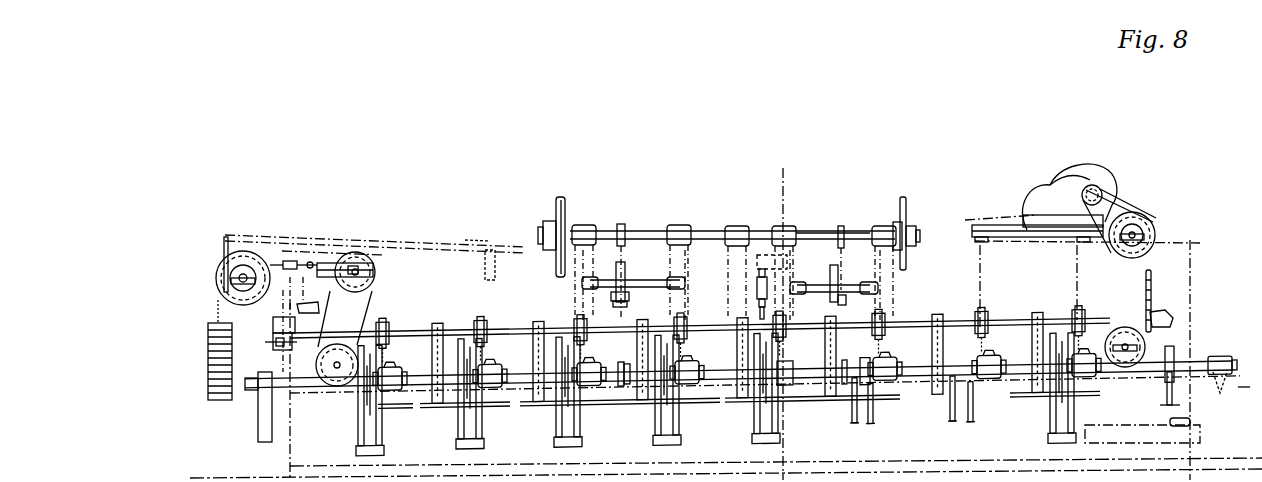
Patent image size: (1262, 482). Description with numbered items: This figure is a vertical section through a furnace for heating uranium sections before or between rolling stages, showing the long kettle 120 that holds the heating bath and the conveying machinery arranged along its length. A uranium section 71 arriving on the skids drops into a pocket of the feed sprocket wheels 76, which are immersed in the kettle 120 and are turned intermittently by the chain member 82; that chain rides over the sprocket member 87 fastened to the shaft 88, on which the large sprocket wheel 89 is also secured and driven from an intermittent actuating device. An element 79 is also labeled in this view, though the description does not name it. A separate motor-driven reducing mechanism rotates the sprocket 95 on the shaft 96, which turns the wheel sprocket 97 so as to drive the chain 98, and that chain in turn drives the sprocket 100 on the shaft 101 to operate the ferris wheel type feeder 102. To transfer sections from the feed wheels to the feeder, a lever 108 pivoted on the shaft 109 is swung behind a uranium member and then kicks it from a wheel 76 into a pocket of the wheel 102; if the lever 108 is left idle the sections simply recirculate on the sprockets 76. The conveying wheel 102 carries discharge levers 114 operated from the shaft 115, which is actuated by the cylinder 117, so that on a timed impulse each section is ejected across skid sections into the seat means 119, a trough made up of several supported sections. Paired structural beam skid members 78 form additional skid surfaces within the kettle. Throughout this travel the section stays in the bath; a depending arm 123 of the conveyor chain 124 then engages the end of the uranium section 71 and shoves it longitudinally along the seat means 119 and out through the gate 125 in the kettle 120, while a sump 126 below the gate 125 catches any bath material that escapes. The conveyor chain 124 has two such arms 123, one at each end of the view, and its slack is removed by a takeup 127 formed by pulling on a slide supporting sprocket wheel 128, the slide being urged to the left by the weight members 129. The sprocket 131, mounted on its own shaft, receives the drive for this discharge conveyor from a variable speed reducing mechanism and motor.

The uranium section 71 is at (1228, 396).
The feed sprocket wheels 76 is at (868, 370).
The structural beam skid members 78 is at (456, 437).
The shaft 79 is at (815, 372).
The chain member 82 is at (840, 305).
The sprocket member 87 is at (843, 228).
The shaft 88 is at (803, 228).
The large sprocket wheel 89 is at (905, 200).
The sprocket 95 is at (557, 208).
The shaft 96 is at (606, 225).
The wheel sprocket 97 is at (625, 224).
The chain 98 is at (625, 330).
The sprocket 100 is at (620, 396).
The shaft 101 is at (505, 370).
The ferris wheel type feeder 102 is at (460, 345).
The lever 108 is at (830, 325).
The shaft 109 is at (900, 330).
The discharge levers 114 is at (425, 322).
The shaft 115 is at (512, 312).
The cylinder 117 is at (755, 292).
The seat means 119 is at (490, 420).
The kettle 120 is at (290, 447).
The depending arm 123 is at (1172, 312).
The conveyor chain 124 is at (465, 240).
The gate 125 is at (1166, 404).
The sump 126 is at (1190, 428).
The takeup 127 is at (220, 265).
The slide supporting sprocket wheel 128 is at (343, 250).
The weight members 129 is at (196, 312).
The sprocket 131 is at (1147, 210).